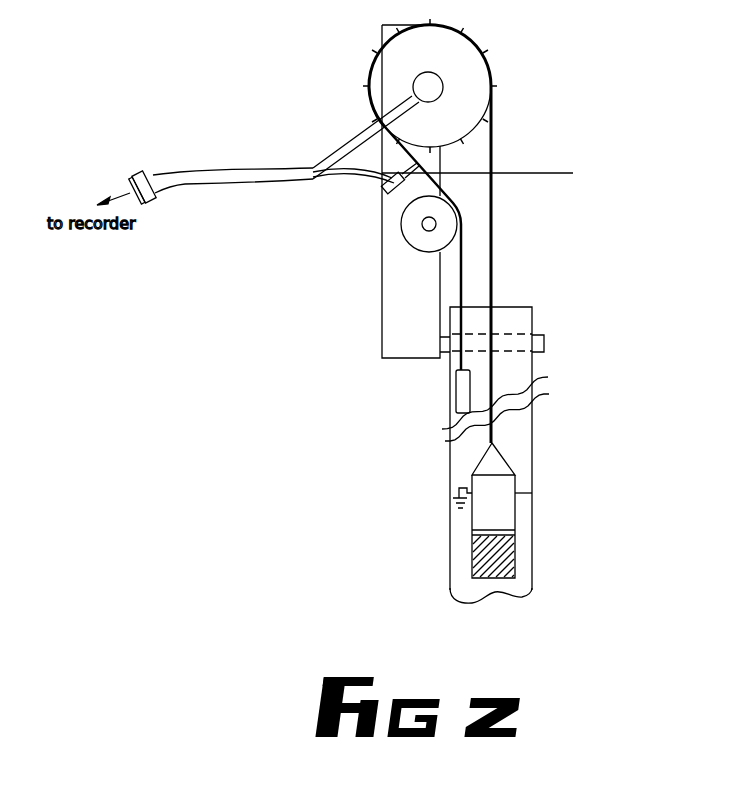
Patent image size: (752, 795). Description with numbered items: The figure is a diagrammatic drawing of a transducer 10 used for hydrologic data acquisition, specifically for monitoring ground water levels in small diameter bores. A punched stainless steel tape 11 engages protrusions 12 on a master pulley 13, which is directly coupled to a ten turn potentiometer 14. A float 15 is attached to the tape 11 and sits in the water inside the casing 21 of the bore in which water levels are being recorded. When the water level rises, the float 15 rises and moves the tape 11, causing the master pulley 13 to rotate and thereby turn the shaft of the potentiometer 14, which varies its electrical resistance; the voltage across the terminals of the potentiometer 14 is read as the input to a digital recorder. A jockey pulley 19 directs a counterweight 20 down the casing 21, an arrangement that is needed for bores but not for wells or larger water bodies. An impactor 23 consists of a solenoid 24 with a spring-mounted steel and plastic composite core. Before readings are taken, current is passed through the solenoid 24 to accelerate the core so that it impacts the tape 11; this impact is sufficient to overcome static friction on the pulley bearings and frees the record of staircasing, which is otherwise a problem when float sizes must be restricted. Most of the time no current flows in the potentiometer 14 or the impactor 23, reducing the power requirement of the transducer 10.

The transducer 10 is at (590, 265).
The punched stainless steel tape 11 is at (493, 202).
The protrusions 12 is at (480, 117).
The master pulley 13 is at (473, 75).
The potentiometer 14 is at (413, 82).
The float 15 is at (507, 508).
The jockey pulley 19 is at (410, 240).
The counterweight 20 is at (458, 395).
The casing 21 is at (533, 567).
The impactor 23 is at (493, 173).
The solenoid 24 is at (383, 193).